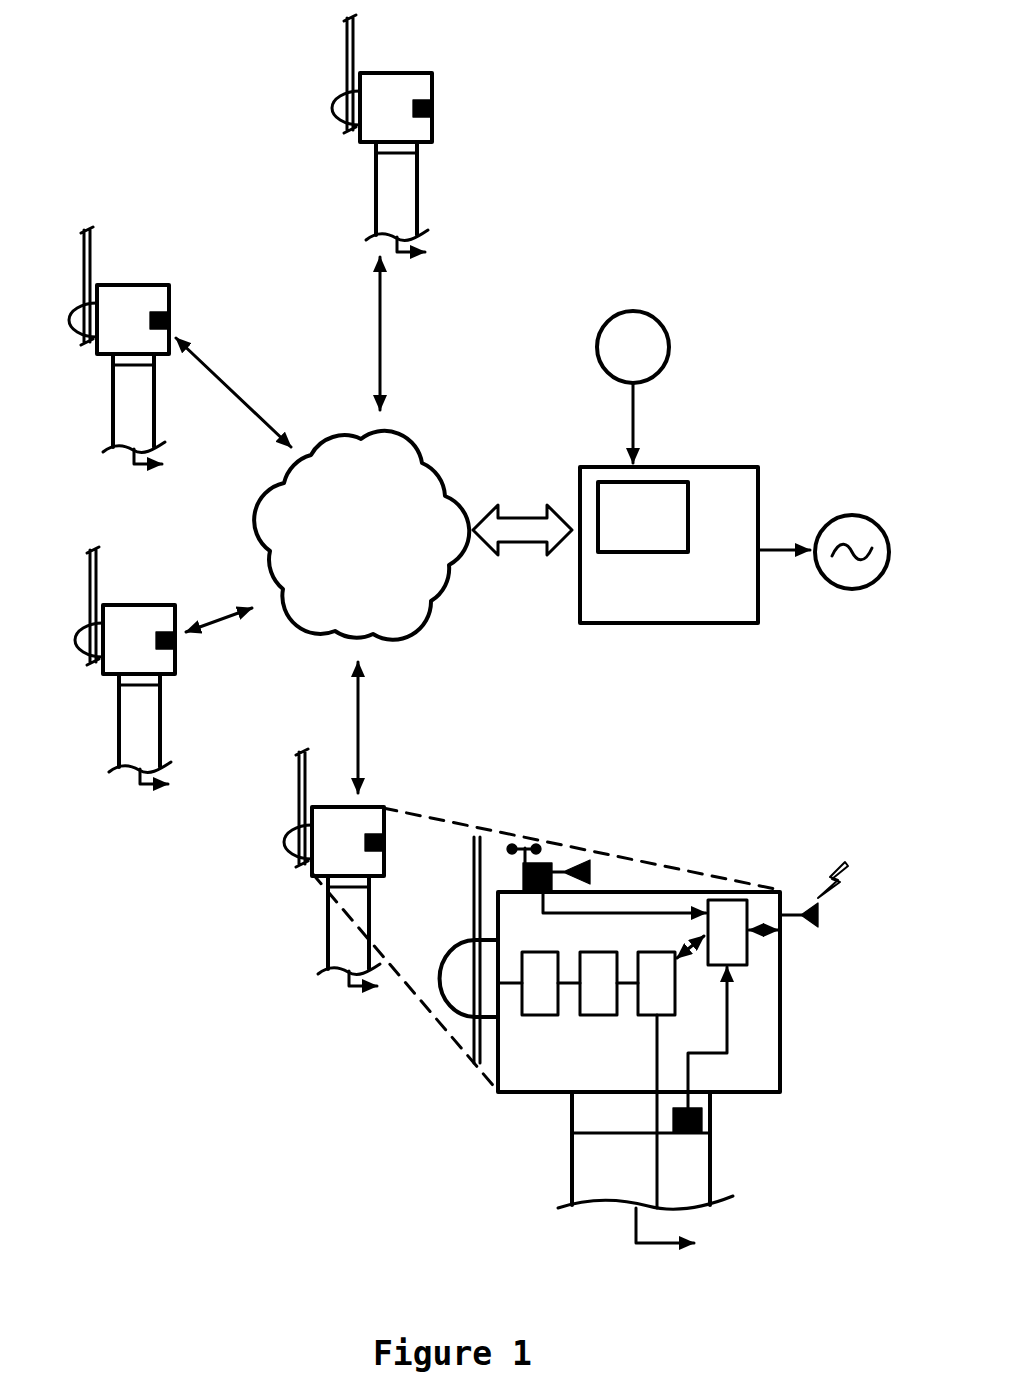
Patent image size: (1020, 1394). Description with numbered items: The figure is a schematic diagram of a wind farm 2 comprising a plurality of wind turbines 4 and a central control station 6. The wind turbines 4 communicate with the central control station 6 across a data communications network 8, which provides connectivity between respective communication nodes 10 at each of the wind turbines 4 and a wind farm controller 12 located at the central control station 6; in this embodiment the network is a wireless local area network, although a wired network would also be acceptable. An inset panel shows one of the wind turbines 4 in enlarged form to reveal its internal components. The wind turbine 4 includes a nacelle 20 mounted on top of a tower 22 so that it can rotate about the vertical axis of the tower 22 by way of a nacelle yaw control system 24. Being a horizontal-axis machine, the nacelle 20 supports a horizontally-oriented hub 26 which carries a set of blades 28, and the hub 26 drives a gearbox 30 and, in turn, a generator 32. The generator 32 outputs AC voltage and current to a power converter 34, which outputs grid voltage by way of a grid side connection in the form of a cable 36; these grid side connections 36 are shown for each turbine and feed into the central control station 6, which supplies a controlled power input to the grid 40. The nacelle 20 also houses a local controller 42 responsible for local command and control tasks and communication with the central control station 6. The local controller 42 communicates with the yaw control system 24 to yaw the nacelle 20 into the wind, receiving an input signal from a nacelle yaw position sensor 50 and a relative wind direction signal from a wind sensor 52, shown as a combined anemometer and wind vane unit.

The wind farm 2 is at (610, 235).
The wind turbine 4 is at (450, 612).
The central control station 6 is at (683, 504).
The data communications network 8 is at (361, 535).
The communication node 10 is at (432, 108).
The wind farm controller 12 is at (643, 517).
The nacelle 20 is at (432, 73).
The tower 22 is at (376, 205).
The nacelle yaw control system 24 is at (578, 1108).
The hub 26 is at (440, 1000).
The blades 28 is at (487, 848).
The gearbox 30 is at (540, 983).
The generator 32 is at (598, 983).
The power converter 34 is at (656, 983).
The grid side connection 36 is at (612, 1290).
The grid 40 is at (848, 590).
The local controller 42 is at (727, 932).
The nacelle yaw position sensor 50 is at (706, 1122).
The wind sensor 52 is at (545, 863).